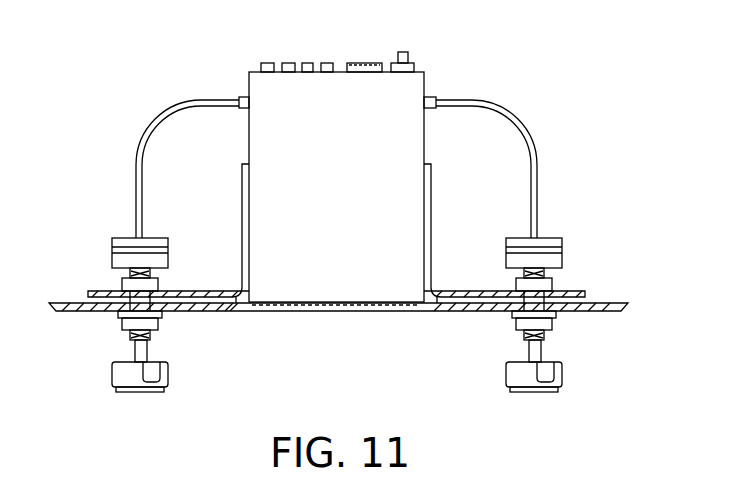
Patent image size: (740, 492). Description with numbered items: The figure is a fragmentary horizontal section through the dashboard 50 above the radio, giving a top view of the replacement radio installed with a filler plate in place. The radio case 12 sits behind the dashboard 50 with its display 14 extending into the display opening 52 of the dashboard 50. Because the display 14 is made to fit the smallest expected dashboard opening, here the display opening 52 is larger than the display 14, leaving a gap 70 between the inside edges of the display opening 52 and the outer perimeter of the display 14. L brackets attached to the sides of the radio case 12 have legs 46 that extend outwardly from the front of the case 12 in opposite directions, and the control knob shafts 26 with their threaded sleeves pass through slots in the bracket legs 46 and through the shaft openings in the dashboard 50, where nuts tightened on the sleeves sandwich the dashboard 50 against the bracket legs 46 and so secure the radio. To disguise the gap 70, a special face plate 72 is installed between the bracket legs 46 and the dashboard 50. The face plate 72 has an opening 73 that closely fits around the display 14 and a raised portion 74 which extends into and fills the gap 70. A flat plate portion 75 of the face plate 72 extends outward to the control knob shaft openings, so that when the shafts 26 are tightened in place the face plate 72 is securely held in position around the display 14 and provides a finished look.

The radio case 12 is at (290, 85).
The display 14 is at (327, 307).
The control knob shaft 26 is at (540, 345).
The bracket leg 46 is at (200, 290).
The dashboard 50 is at (68, 312).
The display opening 52 is at (227, 312).
The gap 70 is at (447, 312).
The special face plate 72 is at (482, 297).
The opening 73 is at (250, 313).
The raised portion 74 is at (235, 312).
The flat plate portion 75 is at (102, 292).